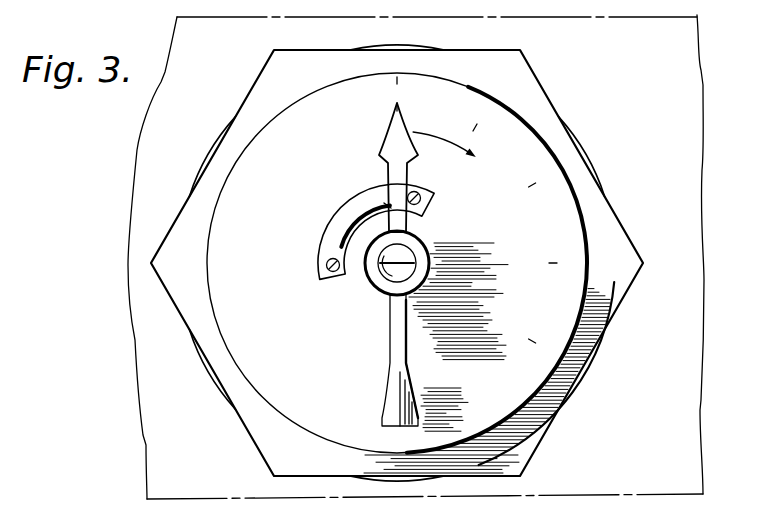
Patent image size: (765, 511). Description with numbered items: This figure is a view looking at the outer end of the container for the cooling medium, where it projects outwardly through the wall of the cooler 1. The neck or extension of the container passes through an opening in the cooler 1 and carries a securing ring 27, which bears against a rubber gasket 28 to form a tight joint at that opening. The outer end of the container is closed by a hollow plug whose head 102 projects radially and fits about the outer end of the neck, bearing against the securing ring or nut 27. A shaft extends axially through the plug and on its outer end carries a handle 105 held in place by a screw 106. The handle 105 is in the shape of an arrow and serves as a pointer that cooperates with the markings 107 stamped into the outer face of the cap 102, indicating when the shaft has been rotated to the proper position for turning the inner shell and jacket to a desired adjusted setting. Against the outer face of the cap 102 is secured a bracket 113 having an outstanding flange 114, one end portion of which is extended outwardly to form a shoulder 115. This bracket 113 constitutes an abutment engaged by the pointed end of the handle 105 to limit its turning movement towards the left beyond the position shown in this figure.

The cooler 1 is at (690, 152).
The securing ring 27 is at (618, 244).
The rubber gasket 28 is at (581, 363).
The head 102 is at (397, 263).
The handle 105 is at (398, 318).
The screw 106 is at (410, 252).
The markings 107 is at (483, 99).
The bracket 113 is at (352, 210).
The outstanding flange 114 is at (352, 233).
The shoulder 115 is at (386, 204).